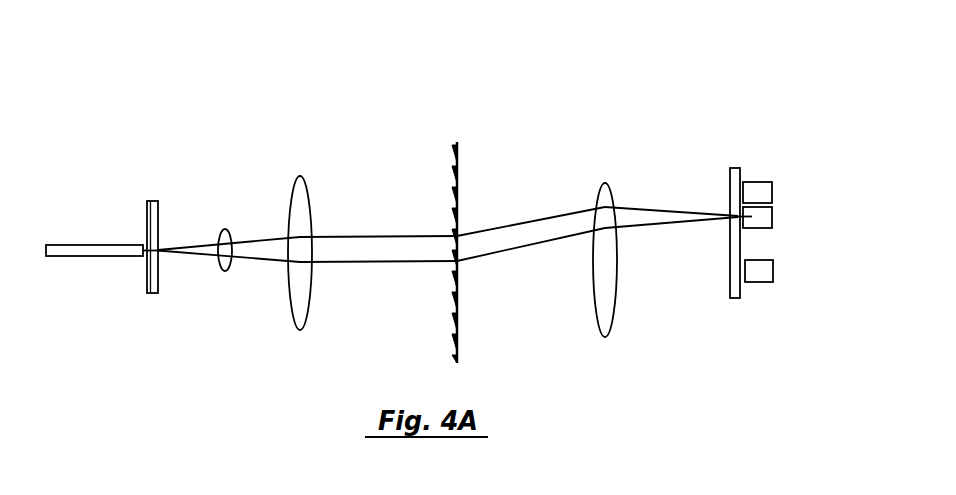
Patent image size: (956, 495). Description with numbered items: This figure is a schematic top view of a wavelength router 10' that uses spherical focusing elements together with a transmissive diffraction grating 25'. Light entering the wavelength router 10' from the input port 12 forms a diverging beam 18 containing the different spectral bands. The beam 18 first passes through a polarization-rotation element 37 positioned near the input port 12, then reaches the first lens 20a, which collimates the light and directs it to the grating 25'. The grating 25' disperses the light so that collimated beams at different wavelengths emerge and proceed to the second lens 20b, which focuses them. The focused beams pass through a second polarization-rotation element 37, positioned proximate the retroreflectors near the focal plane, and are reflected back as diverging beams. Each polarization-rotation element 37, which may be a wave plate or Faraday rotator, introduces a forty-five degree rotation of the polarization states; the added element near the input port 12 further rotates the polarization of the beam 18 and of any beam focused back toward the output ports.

The wavelength router 10' is at (194, 322).
The input port 12 is at (137, 246).
The polarization-rotation element 37 is at (151, 200).
The diverging beam 18 is at (226, 228).
The first lens 20a is at (311, 212).
The transmissive diffraction grating 25' is at (492, 233).
The second lens 20b is at (608, 195).